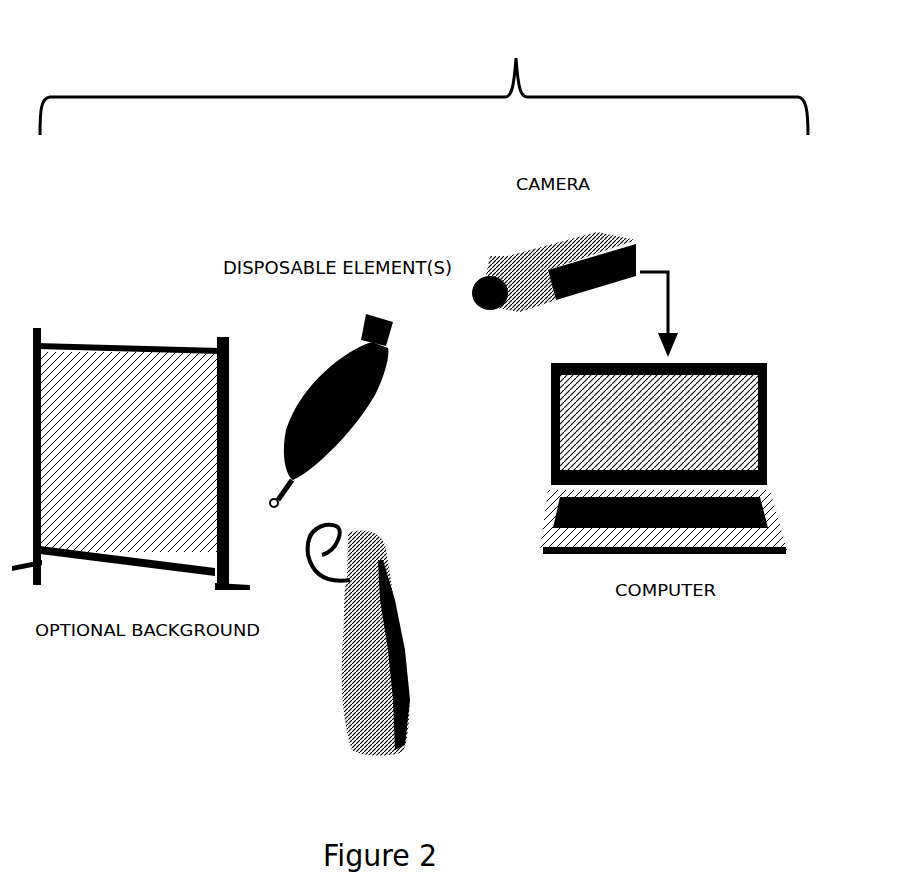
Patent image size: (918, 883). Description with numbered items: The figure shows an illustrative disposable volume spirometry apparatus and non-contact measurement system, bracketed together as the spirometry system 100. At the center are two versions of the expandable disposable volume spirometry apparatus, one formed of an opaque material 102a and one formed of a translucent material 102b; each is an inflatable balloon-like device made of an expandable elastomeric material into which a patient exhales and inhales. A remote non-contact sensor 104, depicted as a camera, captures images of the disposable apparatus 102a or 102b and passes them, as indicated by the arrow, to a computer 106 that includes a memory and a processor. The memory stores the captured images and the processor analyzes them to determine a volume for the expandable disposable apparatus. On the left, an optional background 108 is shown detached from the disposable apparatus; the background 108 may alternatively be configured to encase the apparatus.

The spirometry system 100 is at (424, 80).
The opaque disposable volume spirometry apparatus 102a is at (382, 376).
The translucent disposable volume spirometry apparatus 102b is at (390, 650).
The remote non-contact sensor 104 is at (620, 240).
The computer 106 is at (708, 363).
The background 108 is at (107, 345).